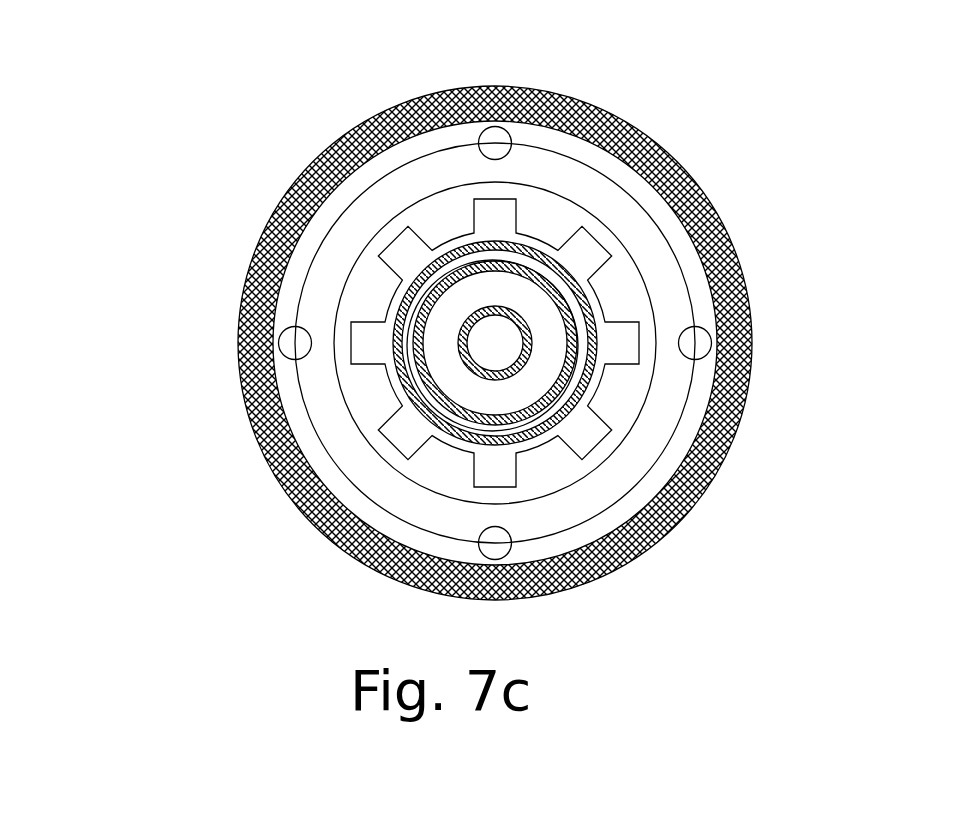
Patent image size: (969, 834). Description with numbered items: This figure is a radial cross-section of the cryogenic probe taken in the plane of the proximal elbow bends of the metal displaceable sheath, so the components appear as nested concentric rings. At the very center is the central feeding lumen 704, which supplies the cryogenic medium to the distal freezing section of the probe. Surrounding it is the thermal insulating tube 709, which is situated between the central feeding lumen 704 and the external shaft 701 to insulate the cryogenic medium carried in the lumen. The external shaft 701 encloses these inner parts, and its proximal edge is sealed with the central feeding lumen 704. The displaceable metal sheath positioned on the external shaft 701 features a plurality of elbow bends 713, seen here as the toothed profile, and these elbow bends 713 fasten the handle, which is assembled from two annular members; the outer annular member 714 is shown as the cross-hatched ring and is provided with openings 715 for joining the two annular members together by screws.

The annular member 714 is at (303, 180).
The openings 715 is at (297, 360).
The elbow bends 713 is at (597, 445).
The external shaft 701 is at (450, 440).
The thermal insulating tube 709 is at (527, 270).
The central feeding lumen 704 is at (530, 343).